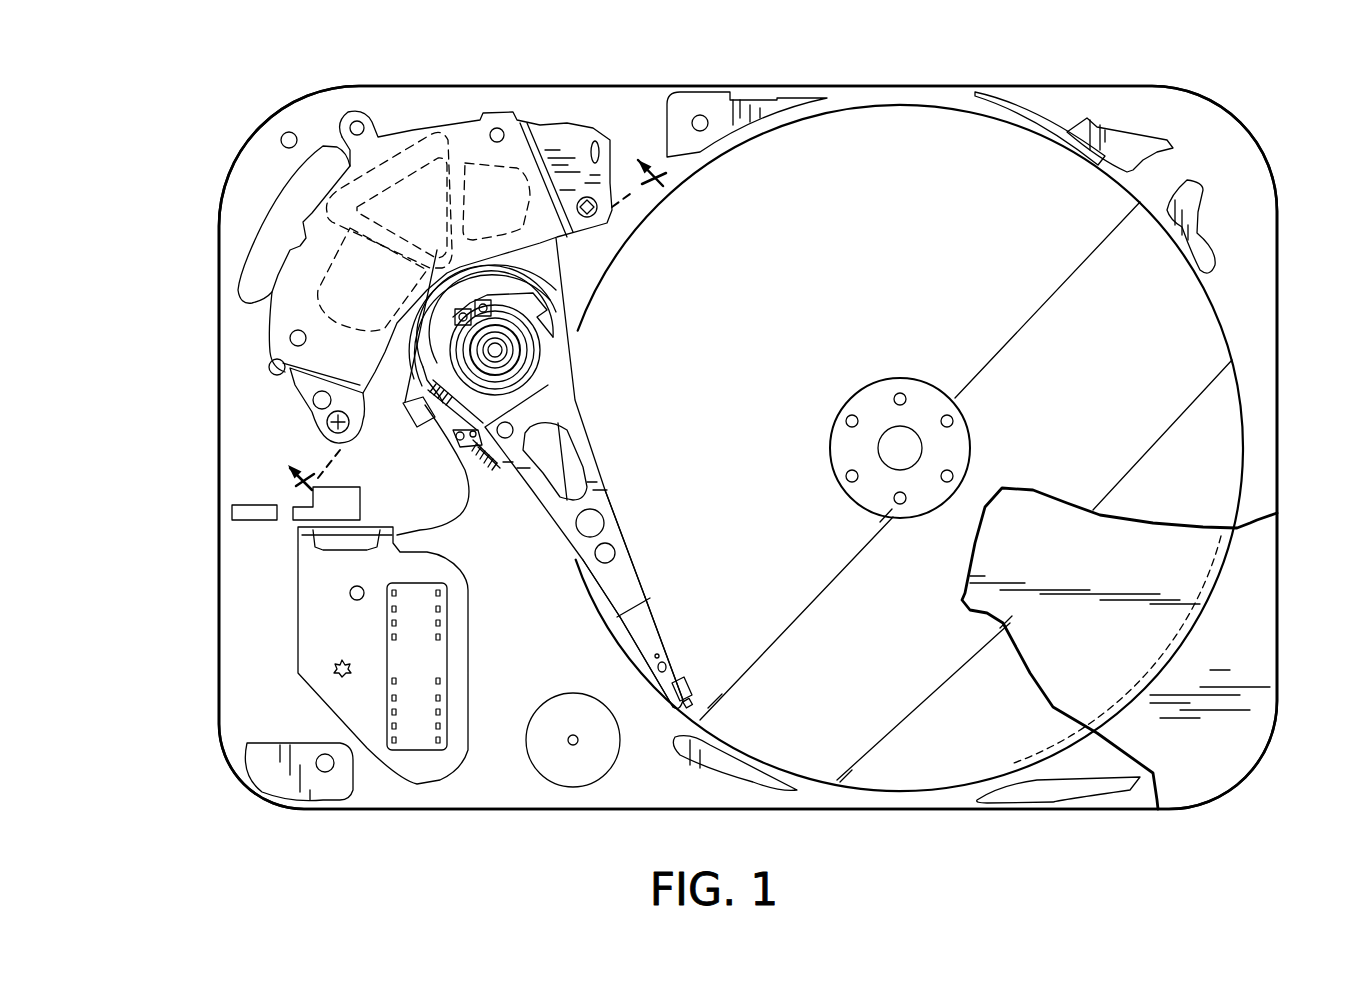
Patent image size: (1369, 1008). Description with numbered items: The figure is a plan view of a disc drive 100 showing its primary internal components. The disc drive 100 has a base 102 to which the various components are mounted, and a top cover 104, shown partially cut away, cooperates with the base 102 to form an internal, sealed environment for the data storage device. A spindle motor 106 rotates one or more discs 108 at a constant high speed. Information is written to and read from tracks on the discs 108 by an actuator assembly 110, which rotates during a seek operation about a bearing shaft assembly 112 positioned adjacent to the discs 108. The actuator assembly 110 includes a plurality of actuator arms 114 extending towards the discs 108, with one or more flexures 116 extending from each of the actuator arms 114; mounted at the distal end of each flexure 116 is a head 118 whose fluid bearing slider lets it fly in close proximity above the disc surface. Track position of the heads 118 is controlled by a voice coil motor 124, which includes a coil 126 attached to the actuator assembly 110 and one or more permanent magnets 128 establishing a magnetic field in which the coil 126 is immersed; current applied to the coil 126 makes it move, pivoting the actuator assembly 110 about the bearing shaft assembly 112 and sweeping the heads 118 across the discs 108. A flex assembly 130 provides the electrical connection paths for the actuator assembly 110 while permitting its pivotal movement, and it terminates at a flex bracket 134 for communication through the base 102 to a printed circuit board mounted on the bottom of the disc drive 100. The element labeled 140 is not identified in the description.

The disc drive 100 is at (148, 142).
The base 102 is at (633, 107).
The top cover 104 is at (1245, 672).
The spindle motor 106 is at (905, 447).
The discs 108 is at (910, 167).
The actuator assembly 110 is at (604, 452).
The bearing shaft assembly 112 is at (497, 350).
The actuator arms 114 is at (622, 522).
The flexures 116 is at (656, 620).
The head 118 is at (690, 677).
The voice coil motor 124 is at (455, 118).
The coil 126 is at (393, 158).
The permanent magnets 128 is at (547, 127).
The flex assembly 130 is at (472, 524).
The flex bracket 134 is at (317, 622).
The bracket 140 is at (297, 315).